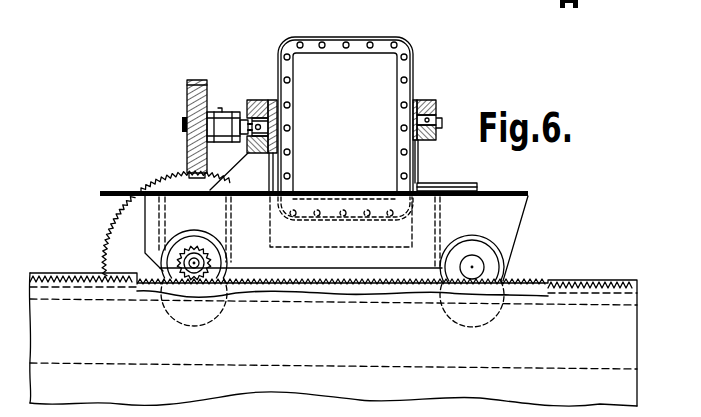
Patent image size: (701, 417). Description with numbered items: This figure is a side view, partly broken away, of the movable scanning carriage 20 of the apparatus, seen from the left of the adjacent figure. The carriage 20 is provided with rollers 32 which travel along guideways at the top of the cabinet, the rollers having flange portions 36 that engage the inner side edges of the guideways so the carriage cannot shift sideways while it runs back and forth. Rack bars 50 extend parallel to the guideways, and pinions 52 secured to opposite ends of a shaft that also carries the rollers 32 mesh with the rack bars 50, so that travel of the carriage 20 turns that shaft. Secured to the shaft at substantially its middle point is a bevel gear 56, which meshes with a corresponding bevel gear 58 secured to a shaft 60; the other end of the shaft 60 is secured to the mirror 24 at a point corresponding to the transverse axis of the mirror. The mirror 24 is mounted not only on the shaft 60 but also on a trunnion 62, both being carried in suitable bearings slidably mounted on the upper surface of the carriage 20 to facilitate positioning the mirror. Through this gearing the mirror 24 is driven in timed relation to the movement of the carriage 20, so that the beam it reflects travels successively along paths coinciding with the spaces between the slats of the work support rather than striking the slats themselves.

The carriage 20 is at (505, 193).
The mirror 24 is at (328, 45).
The rollers 32 is at (487, 264).
The flange portions 36 is at (477, 236).
The rack bars 50 is at (517, 281).
The pinions 52 is at (197, 246).
The bevel gear 56 is at (163, 181).
The bevel gear 58 is at (198, 80).
The shaft 60 is at (183, 124).
The trunnion 62 is at (437, 128).